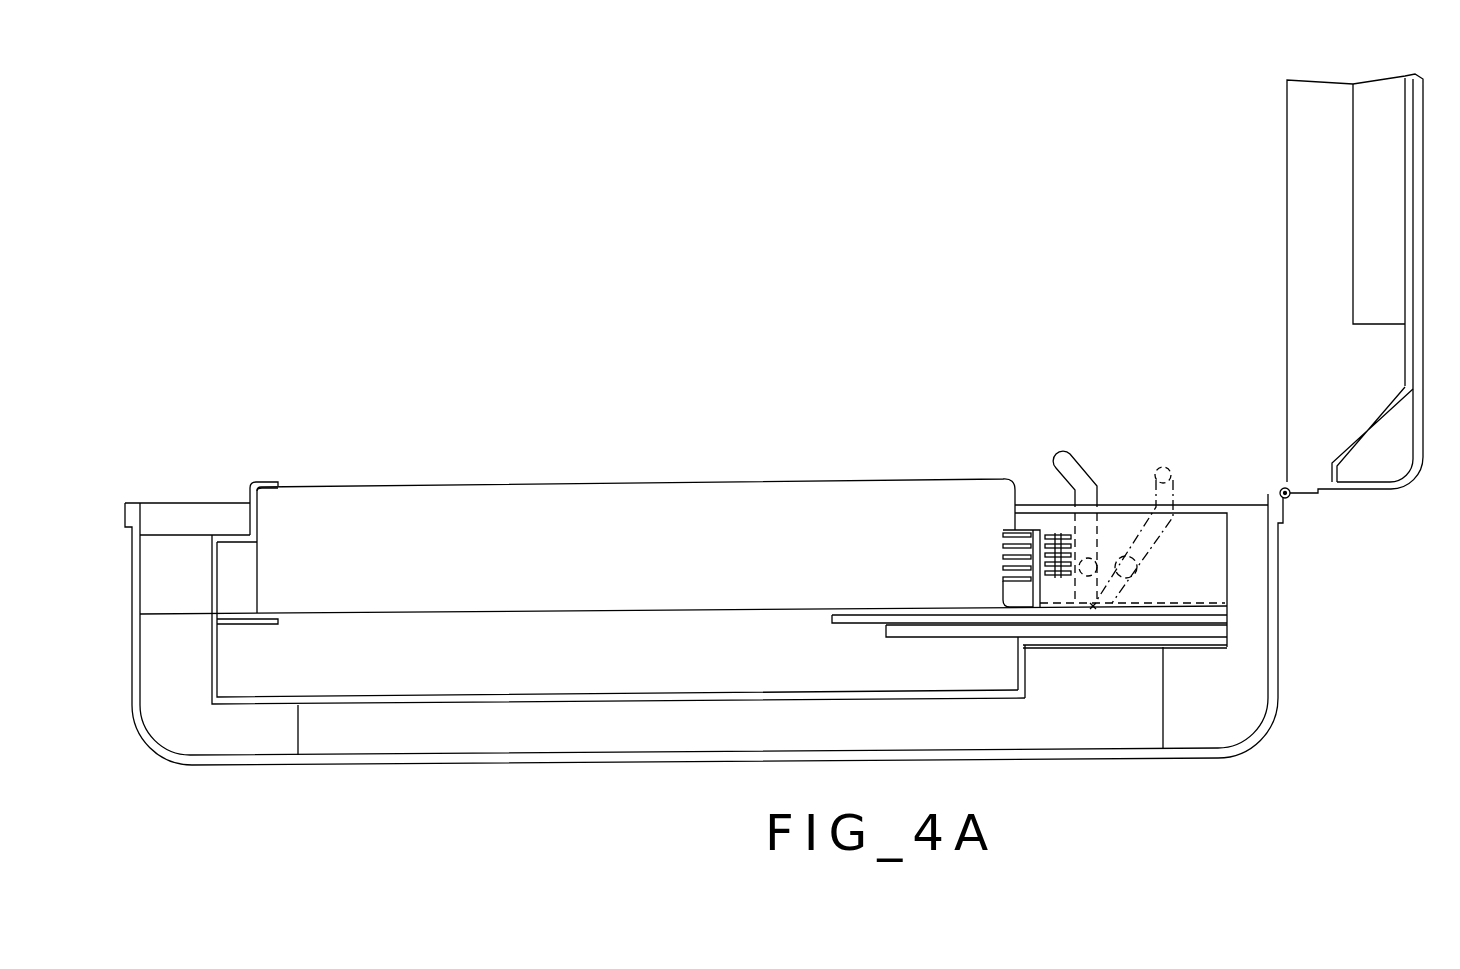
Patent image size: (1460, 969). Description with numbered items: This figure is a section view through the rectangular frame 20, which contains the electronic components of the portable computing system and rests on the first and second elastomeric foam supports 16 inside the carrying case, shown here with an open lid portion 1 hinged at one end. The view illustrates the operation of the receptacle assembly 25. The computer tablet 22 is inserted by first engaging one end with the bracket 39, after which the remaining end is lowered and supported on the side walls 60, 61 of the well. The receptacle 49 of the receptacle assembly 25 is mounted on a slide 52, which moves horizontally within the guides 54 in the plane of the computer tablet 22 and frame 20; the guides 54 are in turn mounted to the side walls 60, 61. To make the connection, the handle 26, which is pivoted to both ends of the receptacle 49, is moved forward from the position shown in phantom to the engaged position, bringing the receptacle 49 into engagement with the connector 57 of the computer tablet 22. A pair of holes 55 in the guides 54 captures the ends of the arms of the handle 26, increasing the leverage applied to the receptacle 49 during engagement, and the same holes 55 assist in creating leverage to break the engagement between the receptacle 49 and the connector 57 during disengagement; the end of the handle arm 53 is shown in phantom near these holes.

The lid 1 is at (1422, 185).
The elastomeric foam supports 16 is at (195, 678).
The rectangular frame 20 is at (212, 682).
The computer tablet 22 is at (640, 581).
The receptacle assembly 25 is at (1083, 455).
The handle 26 is at (1163, 466).
The bracket 39 is at (263, 480).
The receptacle 49 is at (1066, 533).
The slide 52 is at (850, 627).
The stylus tip 53 is at (1138, 568).
The guides 54 is at (928, 637).
The holes 55 is at (1093, 607).
The connector 57 is at (1028, 530).
The side wall 60 is at (1025, 672).
The side wall 61 is at (218, 595).